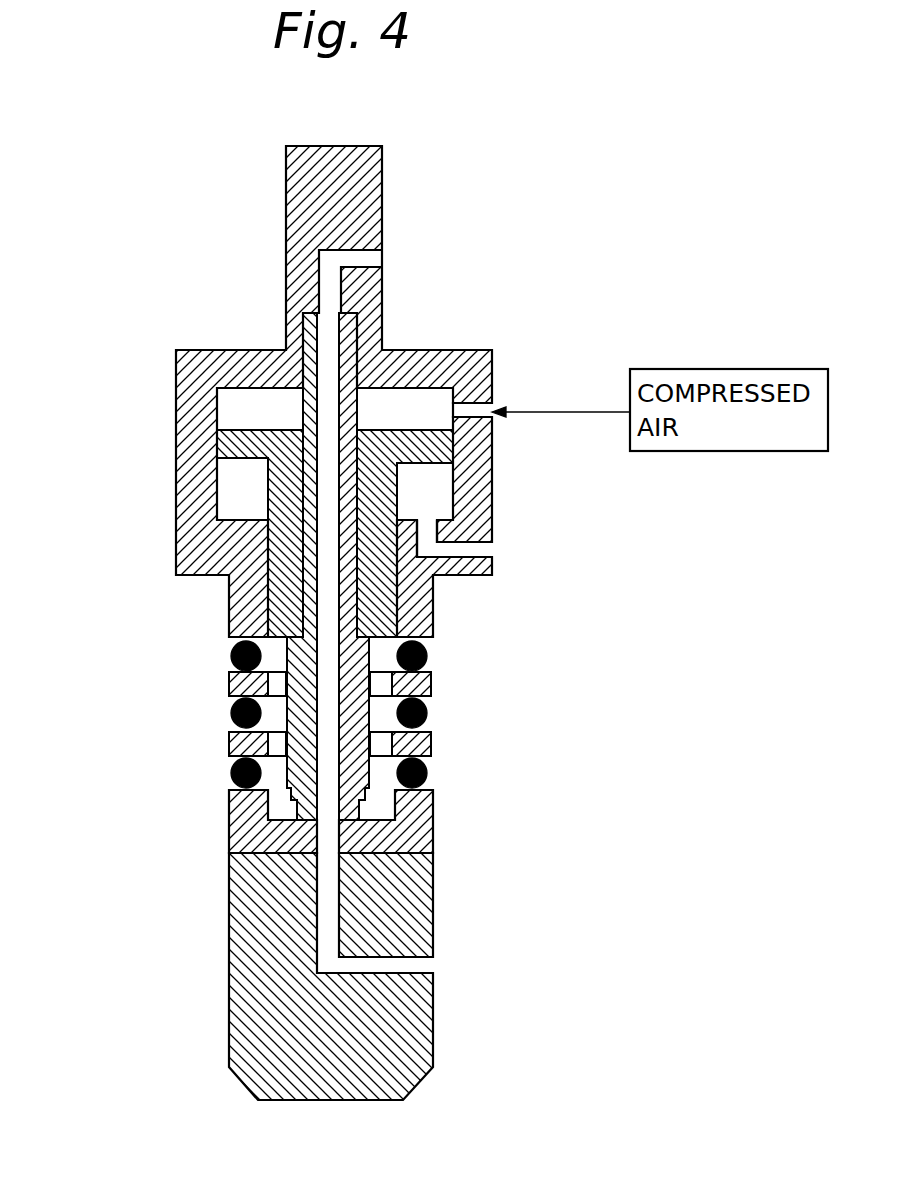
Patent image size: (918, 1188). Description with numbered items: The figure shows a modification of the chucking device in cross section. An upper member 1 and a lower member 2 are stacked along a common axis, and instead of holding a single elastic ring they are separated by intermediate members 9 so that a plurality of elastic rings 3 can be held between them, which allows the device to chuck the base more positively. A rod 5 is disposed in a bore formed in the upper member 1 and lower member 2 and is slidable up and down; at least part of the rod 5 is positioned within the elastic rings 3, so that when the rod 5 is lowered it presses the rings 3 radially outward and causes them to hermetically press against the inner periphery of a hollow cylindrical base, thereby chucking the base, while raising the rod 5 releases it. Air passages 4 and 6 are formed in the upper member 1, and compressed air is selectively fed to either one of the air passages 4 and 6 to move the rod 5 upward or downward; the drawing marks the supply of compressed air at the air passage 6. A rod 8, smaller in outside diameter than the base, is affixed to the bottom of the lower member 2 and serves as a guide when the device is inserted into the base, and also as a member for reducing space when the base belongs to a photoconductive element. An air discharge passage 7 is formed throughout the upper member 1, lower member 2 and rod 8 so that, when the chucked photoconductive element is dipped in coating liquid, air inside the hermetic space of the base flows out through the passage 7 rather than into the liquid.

The upper member 1 is at (176, 362).
The lower member 2 is at (229, 840).
The elastic ring 3 is at (232, 657).
The air passage 4 is at (485, 553).
The rod 5 is at (237, 438).
The air passage 6 is at (493, 410).
The air discharge passage 7 is at (417, 965).
The rod 8 is at (250, 1014).
The intermediate member 9 is at (230, 745).